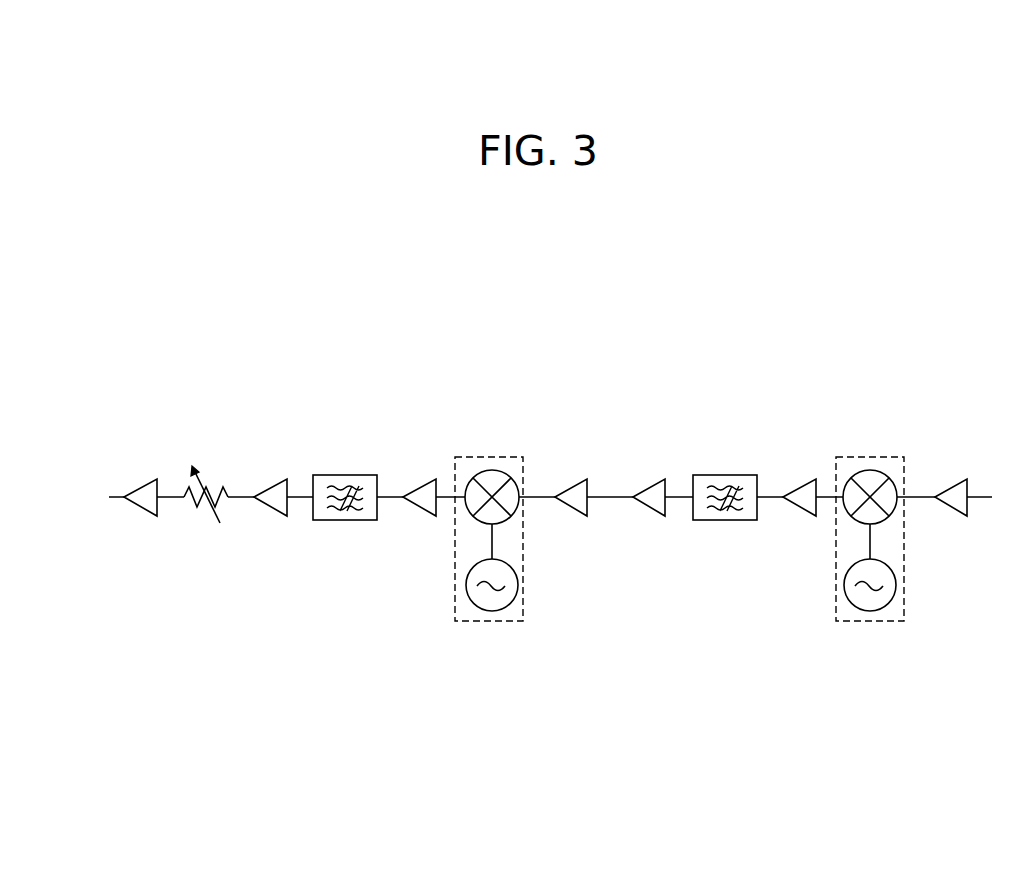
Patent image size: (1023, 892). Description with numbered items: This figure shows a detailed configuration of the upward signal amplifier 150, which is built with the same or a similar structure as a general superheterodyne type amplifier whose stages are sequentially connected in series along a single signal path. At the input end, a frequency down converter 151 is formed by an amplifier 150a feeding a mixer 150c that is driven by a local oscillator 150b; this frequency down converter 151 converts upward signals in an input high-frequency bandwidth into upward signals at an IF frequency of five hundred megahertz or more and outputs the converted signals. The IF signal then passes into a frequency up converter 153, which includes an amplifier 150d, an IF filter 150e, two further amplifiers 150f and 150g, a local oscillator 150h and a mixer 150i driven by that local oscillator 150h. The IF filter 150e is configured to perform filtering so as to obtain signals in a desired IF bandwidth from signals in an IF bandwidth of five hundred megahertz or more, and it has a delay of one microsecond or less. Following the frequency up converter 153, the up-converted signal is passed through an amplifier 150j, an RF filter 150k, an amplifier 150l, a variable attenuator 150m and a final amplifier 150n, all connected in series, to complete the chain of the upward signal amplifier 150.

The upward signal amplifier 150 is at (125, 364).
The amplifier 150a is at (953, 469).
The local oscillator 150b is at (828, 567).
The mixer 150c is at (868, 464).
The amplifier 150d is at (792, 468).
The IF filter 150e is at (725, 463).
The amplifier 150f is at (651, 467).
The amplifier 150g is at (567, 467).
The local oscillator 150h is at (450, 567).
The mixer 150i is at (492, 464).
The amplifier 150j is at (413, 467).
The RF filter 150k is at (345, 463).
The amplifier 150l is at (275, 452).
The variable attenuator 150m is at (212, 470).
The amplifier 150n is at (133, 467).
The frequency down converter 151 is at (870, 576).
The frequency up converter 153 is at (489, 576).